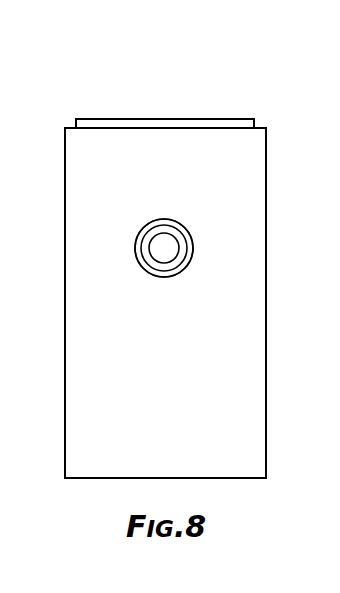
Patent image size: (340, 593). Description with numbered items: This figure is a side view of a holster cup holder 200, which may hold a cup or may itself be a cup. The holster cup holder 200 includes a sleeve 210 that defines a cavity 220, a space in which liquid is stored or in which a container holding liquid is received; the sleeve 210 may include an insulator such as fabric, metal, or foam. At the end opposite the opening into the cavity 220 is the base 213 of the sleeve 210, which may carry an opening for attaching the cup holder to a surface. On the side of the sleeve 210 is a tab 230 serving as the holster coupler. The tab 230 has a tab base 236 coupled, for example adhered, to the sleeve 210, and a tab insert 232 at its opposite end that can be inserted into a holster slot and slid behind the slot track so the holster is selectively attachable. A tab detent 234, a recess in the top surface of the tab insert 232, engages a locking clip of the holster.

The holster cup holder 200 is at (197, 100).
The sleeve 210 is at (255, 154).
The base 213 is at (238, 478).
The cavity 220 is at (107, 112).
The tab 230 is at (137, 221).
The tab insert 232 is at (181, 262).
The tab detent 234 is at (168, 248).
The tab base 236 is at (158, 220).